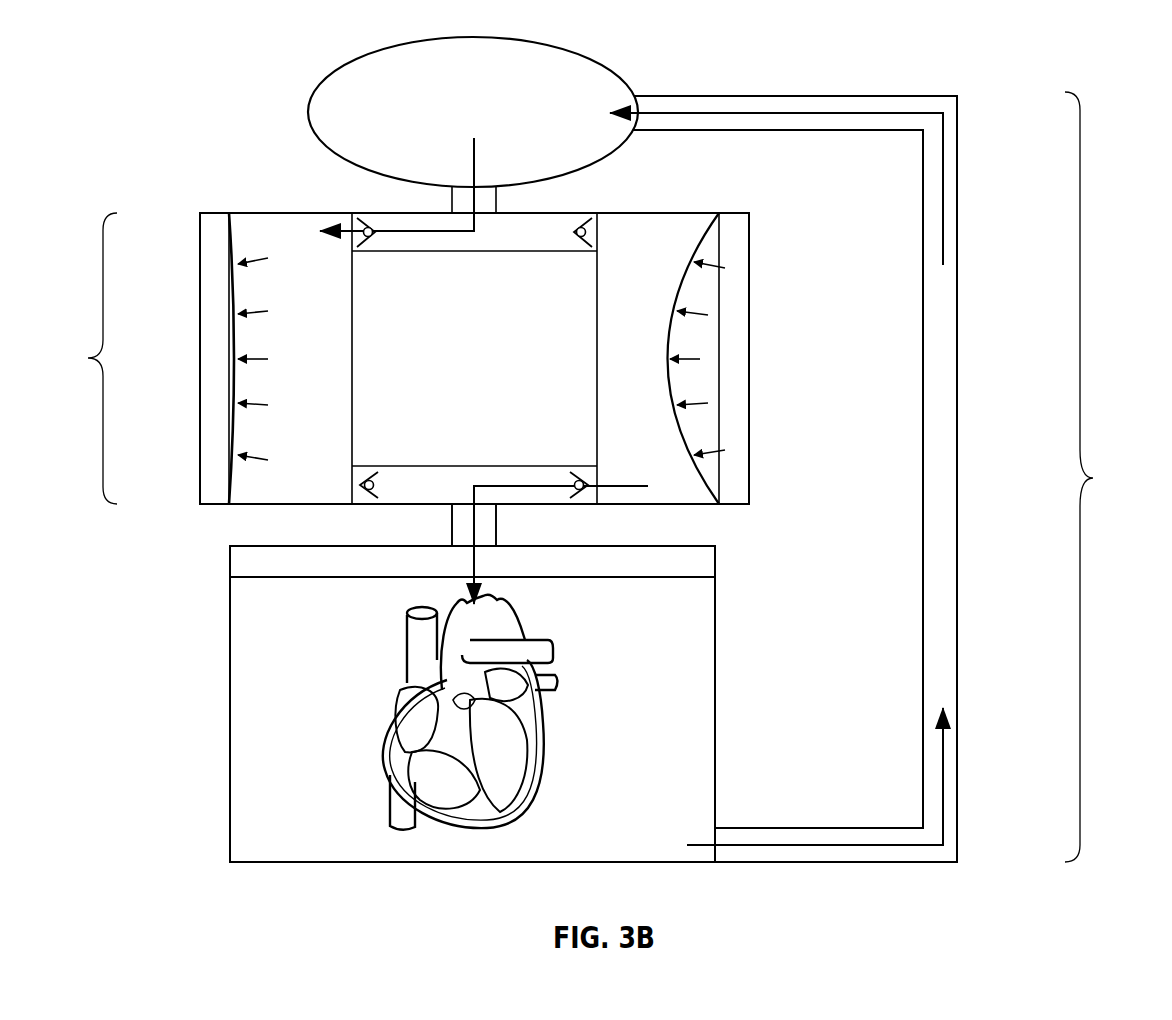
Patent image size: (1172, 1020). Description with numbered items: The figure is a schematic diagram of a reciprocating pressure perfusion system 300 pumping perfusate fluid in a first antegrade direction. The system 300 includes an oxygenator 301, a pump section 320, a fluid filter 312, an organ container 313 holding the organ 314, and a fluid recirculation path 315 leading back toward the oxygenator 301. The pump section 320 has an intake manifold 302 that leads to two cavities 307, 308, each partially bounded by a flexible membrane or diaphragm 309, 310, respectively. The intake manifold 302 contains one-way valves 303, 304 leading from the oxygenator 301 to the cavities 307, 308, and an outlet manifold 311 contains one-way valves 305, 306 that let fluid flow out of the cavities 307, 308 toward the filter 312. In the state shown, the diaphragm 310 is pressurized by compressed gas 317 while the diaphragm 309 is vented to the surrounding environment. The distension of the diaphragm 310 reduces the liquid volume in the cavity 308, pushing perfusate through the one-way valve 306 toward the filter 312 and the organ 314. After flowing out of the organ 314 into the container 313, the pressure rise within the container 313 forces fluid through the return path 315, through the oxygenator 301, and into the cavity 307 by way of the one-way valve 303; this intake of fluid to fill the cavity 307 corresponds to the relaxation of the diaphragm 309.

The reciprocating pressure perfusion system 300 is at (1109, 477).
The oxygenator 301 is at (367, 55).
The intake manifold 302 is at (422, 218).
The one-way valve 303 is at (372, 240).
The one-way valve 304 is at (577, 240).
The one-way valve 305 is at (372, 475).
The one-way valve 306 is at (578, 478).
The cavity 307 is at (323, 372).
The cavity 308 is at (650, 372).
The diaphragm 309 is at (232, 342).
The diaphragm 310 is at (668, 345).
The outlet manifold 311 is at (452, 488).
The fluid filter 312 is at (235, 562).
The organ container 313 is at (228, 645).
The organ 314 is at (390, 762).
The fluid recirculation path 315 is at (950, 622).
The compressed gas 317 is at (710, 297).
The pump section 320 is at (78, 358).